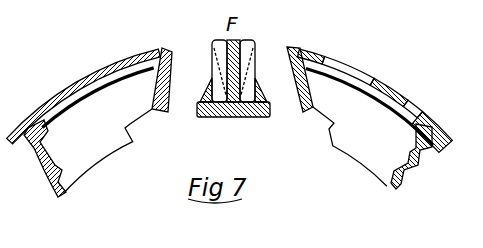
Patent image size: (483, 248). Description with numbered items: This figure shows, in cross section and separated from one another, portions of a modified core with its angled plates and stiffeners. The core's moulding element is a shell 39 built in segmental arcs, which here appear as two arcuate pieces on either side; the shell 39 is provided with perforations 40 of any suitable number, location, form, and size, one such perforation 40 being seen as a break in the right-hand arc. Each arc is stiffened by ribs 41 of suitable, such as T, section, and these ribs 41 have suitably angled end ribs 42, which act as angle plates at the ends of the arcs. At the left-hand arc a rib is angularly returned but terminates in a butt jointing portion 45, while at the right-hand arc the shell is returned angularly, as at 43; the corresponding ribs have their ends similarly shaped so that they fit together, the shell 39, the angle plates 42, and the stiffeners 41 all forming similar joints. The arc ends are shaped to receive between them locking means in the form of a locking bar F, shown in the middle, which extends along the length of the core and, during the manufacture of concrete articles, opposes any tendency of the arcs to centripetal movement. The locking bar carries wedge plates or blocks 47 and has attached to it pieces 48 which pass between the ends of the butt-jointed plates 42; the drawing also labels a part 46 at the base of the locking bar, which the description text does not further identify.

The shell 39 is at (90, 72).
The perforations 40 is at (343, 67).
The ribs 41 is at (369, 129).
The angled end ribs 42 is at (89, 132).
The angularly returned arc end 43 is at (302, 112).
The butt jointing portion 45 is at (171, 50).
The base plate of clamp F 46 is at (235, 118).
The wedge plates or blocks 47 is at (205, 96).
The pieces 48 is at (225, 67).